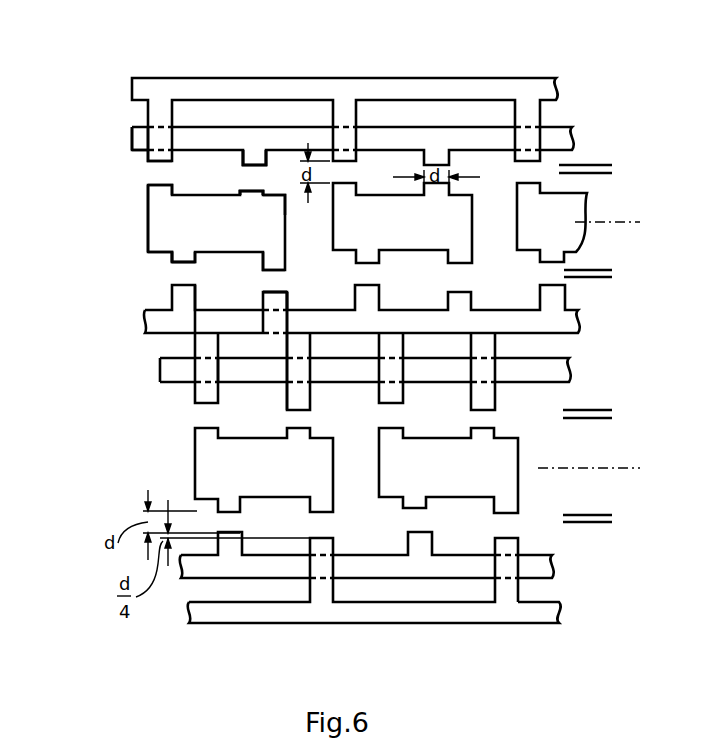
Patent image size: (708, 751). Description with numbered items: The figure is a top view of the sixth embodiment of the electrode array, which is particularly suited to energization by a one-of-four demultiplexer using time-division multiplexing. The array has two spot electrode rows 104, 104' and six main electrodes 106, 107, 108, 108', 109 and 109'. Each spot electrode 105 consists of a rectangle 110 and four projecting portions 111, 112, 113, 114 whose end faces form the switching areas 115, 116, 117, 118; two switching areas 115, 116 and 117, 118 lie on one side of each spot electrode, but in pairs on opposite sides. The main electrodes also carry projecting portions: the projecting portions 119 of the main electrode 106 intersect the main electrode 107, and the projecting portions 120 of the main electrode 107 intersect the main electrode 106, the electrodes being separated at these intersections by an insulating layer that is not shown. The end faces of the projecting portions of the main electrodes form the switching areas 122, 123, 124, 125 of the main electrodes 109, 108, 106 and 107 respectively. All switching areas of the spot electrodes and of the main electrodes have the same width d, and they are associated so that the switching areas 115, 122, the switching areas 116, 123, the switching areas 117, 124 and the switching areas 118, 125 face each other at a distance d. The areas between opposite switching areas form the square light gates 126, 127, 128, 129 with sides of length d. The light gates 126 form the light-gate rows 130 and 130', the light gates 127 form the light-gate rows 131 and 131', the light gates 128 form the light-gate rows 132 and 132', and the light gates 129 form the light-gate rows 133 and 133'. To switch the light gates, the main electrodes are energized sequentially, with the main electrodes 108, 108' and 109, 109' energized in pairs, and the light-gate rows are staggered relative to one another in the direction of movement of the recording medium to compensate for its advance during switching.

The spot electrode row 104 is at (511, 223).
The spot electrode row 104' is at (443, 470).
The spot electrode 105 is at (252, 207).
The main electrode 106 is at (576, 322).
The main electrode 107 is at (568, 370).
The main electrode 108 is at (396, 139).
The main electrode 108' is at (427, 590).
The main electrode 109 is at (396, 110).
The main electrode 109' is at (423, 562).
The rectangle 110 is at (175, 222).
The projecting portion 111 is at (163, 193).
The projecting portion 112 is at (262, 192).
The projecting portion 113 is at (172, 257).
The projecting portion 114 is at (273, 262).
The switching area 115 is at (150, 183).
The switching area 116 is at (254, 191).
The switching area 117 is at (182, 273).
The switching area 118 is at (276, 284).
The projecting portion 119 is at (273, 323).
The projecting portion 120 is at (248, 360).
The switching area 122 is at (148, 157).
The switching area 123 is at (247, 162).
The switching area 124 is at (268, 290).
The switching area 125 is at (289, 298).
The light gate 126 is at (157, 172).
The light gate 127 is at (249, 172).
The light gate 128 is at (183, 282).
The light gate 129 is at (281, 292).
The light-gate row 130 is at (623, 159).
The light-gate row 131 is at (622, 187).
The light-gate row 132 is at (624, 261).
The light-gate row 133 is at (624, 288).
The light-gate row 130' is at (627, 509).
The light-gate row 131' is at (627, 534).
The light-gate row 132' is at (627, 403).
The light-gate row 133' is at (627, 428).